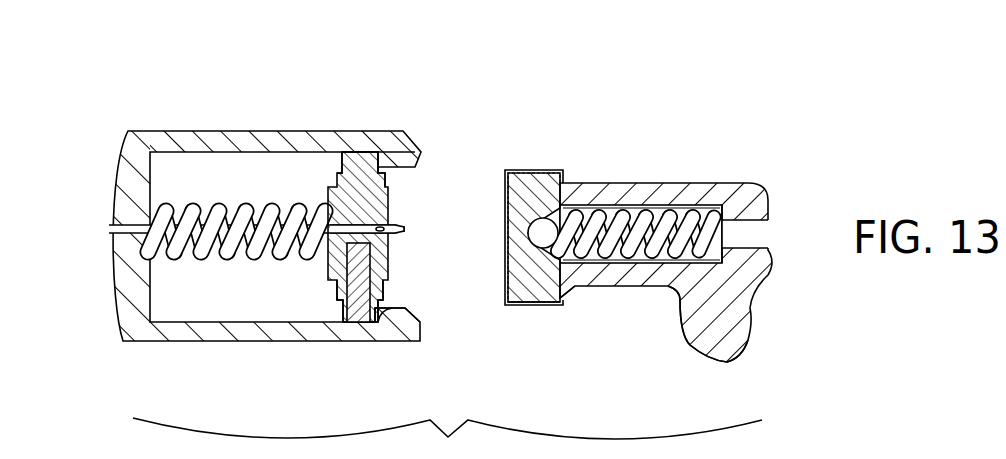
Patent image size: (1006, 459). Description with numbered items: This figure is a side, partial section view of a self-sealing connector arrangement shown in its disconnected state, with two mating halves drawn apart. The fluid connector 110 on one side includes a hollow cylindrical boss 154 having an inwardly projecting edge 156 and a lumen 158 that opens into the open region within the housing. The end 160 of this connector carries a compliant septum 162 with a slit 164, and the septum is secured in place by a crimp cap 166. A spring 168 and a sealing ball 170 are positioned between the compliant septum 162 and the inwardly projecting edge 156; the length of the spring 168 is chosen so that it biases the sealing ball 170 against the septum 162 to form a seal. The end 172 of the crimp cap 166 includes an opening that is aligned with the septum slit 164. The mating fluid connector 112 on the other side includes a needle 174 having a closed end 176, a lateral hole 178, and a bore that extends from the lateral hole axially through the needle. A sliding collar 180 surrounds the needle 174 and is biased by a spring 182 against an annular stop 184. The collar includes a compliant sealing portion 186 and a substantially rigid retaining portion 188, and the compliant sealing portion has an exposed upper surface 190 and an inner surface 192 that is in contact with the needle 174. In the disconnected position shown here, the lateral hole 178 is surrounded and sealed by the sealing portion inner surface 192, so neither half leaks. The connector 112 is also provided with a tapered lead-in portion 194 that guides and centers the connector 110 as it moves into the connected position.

The fluid connector 110 is at (637, 237).
The fluid connector 112 is at (536, 236).
The hollow cylindrical boss 154 is at (641, 287).
The inwardly projecting edge 156 is at (710, 233).
The lumen 158 is at (762, 233).
The end 160 is at (562, 329).
The compliant septum 162 is at (532, 298).
The slit 164 is at (509, 224).
The crimp cap 166 is at (568, 178).
The spring 168 is at (737, 213).
The sealing ball 170 is at (543, 227).
The end of crimp cap 172 is at (505, 180).
The needle 174 is at (287, 260).
The closed end 176 is at (400, 226).
The lateral hole 178 is at (398, 236).
The sliding collar 180 is at (371, 150).
The spring 182 is at (289, 201).
The annular stop 184 is at (390, 308).
The compliant sealing portion 186 is at (334, 193).
The substantially rigid retaining portion 188 is at (338, 186).
The exposed upper surface 190 is at (388, 281).
The inner surface 192 is at (356, 245).
The tapered lead-in portion 194 is at (422, 147).